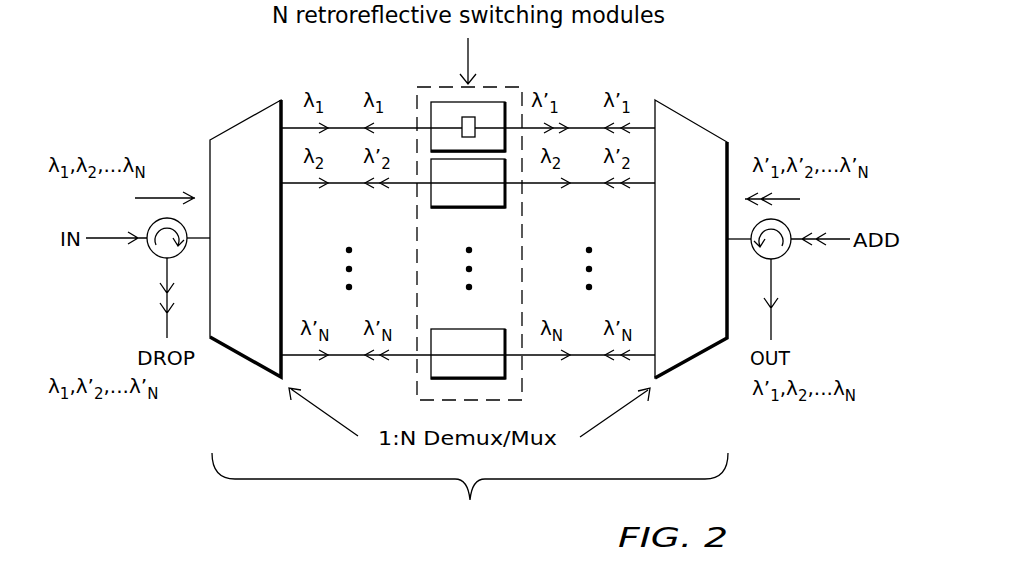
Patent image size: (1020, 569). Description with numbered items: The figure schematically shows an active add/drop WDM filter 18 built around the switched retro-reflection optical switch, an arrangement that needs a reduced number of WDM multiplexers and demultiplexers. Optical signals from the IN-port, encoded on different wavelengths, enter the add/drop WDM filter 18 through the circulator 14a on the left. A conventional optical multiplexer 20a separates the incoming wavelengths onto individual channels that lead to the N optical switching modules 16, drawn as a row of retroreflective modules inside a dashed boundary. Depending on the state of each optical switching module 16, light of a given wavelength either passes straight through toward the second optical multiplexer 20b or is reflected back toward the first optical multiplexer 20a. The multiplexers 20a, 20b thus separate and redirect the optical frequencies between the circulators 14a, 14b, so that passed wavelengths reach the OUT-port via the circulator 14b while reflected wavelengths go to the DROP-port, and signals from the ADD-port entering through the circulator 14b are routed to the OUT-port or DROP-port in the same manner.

The circulator 14a is at (158, 257).
The circulator 14b is at (783, 258).
The optical switching modules 16 is at (492, 86).
The add/drop WDM filter 18 is at (470, 493).
The optical multiplexer 20a is at (268, 303).
The optical multiplexer 20b is at (712, 305).